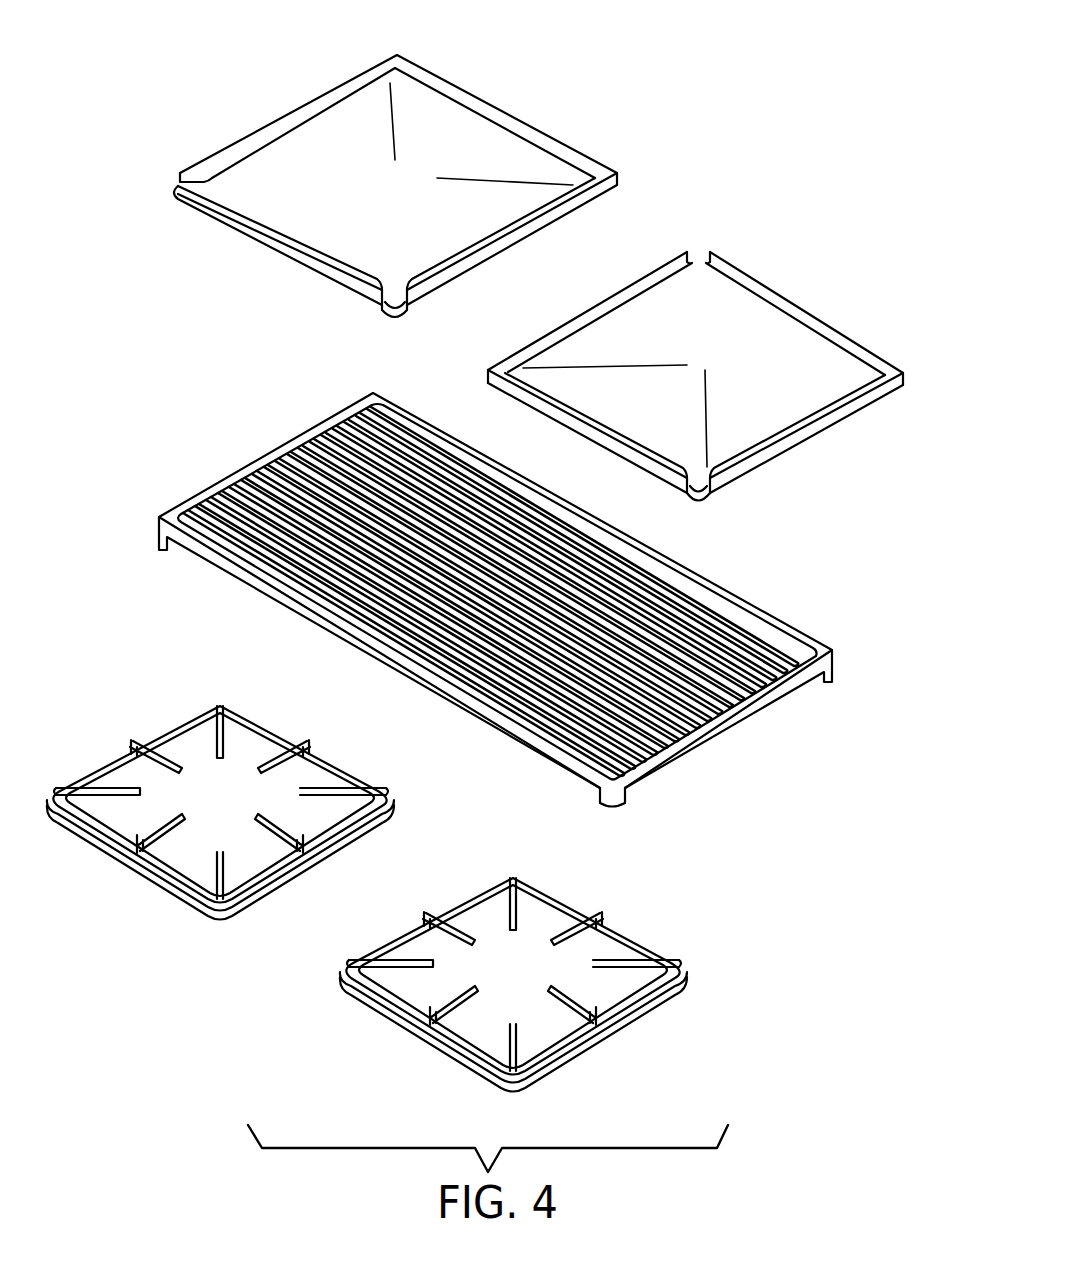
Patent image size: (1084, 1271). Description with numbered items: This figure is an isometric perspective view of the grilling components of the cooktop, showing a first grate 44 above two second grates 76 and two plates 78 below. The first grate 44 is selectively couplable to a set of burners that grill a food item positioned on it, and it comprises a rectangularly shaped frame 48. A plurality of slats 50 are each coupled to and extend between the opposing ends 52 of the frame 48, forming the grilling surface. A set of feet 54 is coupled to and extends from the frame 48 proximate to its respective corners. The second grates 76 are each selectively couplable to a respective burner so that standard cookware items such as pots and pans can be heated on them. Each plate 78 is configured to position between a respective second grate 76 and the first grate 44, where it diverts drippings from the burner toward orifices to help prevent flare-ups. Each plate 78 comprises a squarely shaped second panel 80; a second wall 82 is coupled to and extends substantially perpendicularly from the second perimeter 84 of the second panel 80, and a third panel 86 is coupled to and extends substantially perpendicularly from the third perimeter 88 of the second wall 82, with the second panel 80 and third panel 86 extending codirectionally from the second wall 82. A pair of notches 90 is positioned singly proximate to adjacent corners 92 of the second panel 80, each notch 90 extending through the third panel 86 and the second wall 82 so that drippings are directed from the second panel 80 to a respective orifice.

The first grate 44 is at (226, 553).
The frame 48 is at (473, 631).
The slats 50 is at (480, 608).
The opposing ends 52 is at (750, 718).
The feet 54 is at (630, 807).
The second grates 76 is at (264, 908).
The plates 78 is at (672, 251).
The second panel 80 is at (446, 162).
The second wall 82 is at (206, 216).
The second perimeter 84 is at (245, 240).
The third panel 86 is at (292, 248).
The third perimeter 88 is at (333, 280).
The notches 90 is at (924, 359).
The adjacent corners 92 is at (700, 266).